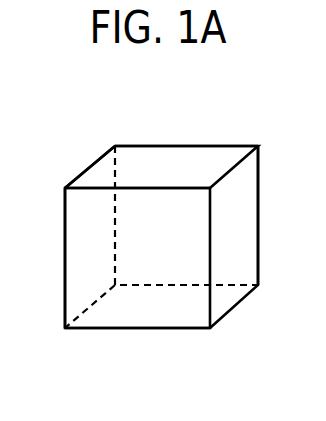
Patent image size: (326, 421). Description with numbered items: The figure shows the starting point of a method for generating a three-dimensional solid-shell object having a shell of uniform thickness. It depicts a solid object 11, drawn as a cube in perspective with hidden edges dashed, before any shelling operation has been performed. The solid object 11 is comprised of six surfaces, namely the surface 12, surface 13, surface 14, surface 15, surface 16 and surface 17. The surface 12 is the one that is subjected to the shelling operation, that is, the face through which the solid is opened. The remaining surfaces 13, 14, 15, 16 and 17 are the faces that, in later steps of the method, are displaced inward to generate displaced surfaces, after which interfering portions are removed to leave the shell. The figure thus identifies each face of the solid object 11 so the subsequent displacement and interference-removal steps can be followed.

The solid object 11 is at (265, 133).
The surface subjected to the shelling operation 12 is at (195, 147).
The surface 13 is at (250, 232).
The surface 14 is at (87, 267).
The surface 15 is at (64, 189).
The surface 16 is at (147, 155).
The surface 17 is at (160, 316).